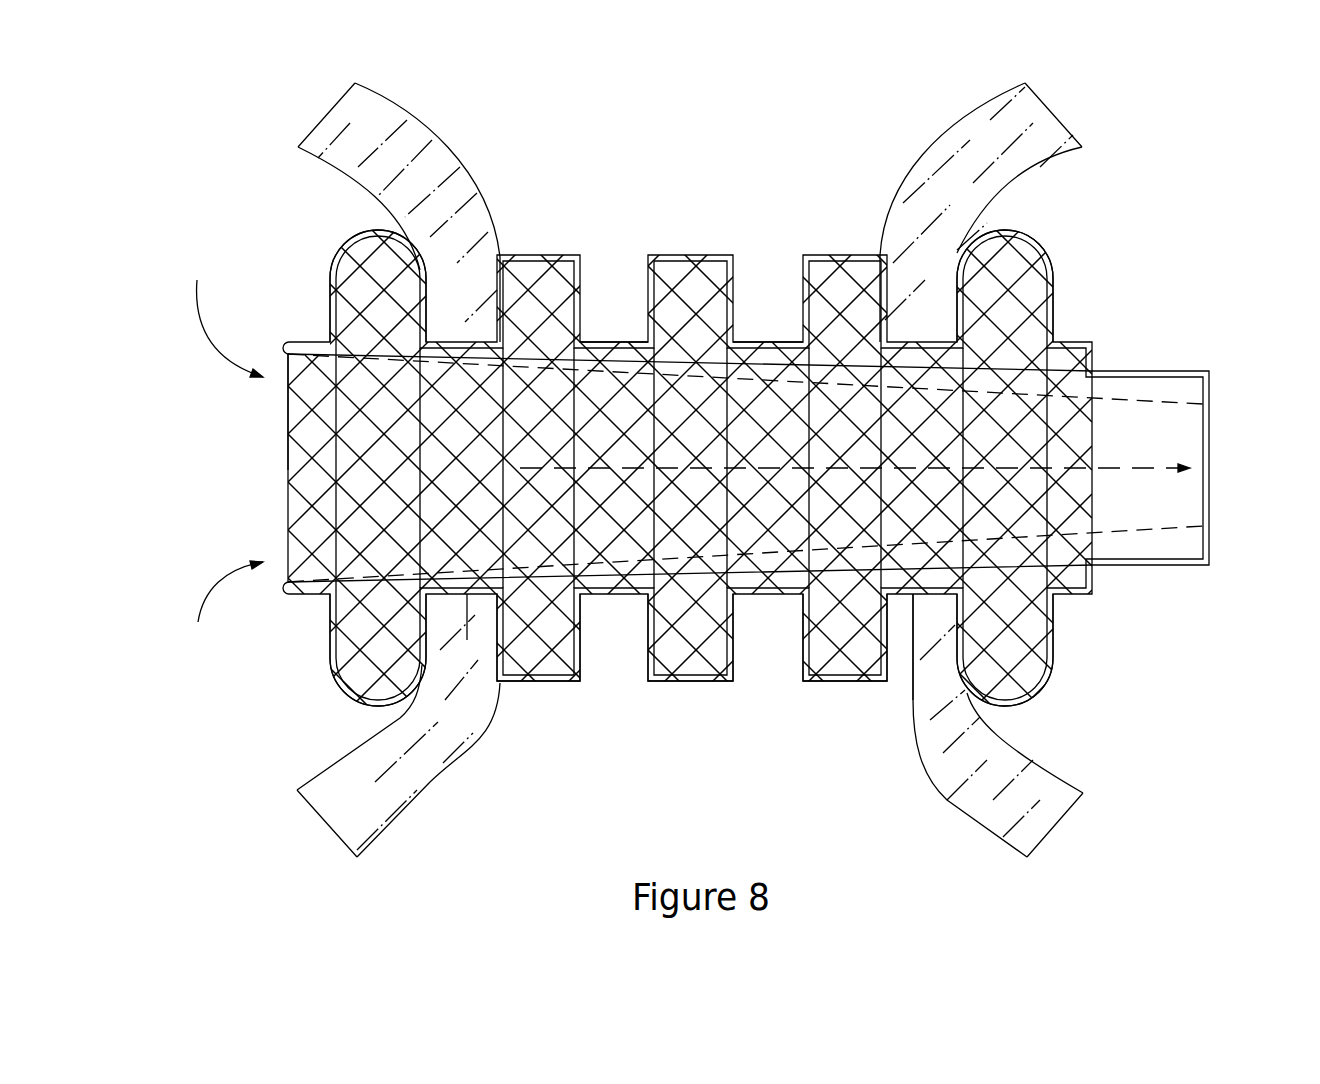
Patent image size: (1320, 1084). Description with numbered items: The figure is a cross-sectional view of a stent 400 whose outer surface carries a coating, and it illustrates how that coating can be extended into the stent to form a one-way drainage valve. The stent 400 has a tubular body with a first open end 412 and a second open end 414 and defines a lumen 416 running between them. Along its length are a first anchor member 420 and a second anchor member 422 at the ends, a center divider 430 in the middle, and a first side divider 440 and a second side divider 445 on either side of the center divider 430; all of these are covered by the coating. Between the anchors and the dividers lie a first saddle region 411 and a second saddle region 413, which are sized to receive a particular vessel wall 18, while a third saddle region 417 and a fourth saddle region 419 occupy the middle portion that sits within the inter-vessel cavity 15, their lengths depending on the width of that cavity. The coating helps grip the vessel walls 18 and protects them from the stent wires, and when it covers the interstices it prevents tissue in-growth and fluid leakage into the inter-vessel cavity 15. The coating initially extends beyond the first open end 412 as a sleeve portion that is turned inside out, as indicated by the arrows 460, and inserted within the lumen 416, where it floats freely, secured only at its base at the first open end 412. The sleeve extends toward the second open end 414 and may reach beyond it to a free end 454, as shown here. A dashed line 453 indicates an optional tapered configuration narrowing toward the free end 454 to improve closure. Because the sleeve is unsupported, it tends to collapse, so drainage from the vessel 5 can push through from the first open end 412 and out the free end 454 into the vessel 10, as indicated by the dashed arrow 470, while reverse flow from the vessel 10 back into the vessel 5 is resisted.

The vessel 5 is at (146, 302).
The vessel 10 is at (1158, 302).
The inter-vessel cavity 15 is at (679, 107).
The vessel walls 18 is at (342, 165).
The stent 400 is at (1162, 212).
The first saddle region 411 is at (467, 594).
The first open end 412 is at (288, 535).
The second saddle region 413 is at (912, 755).
The second open end 414 is at (1092, 426).
The lumen 416 is at (288, 403).
The third saddle region 417 is at (612, 343).
The fourth saddle region 419 is at (768, 343).
The first anchor member 420 is at (353, 692).
The second anchor member 422 is at (1033, 693).
The center divider 430 is at (710, 683).
The first side divider 440 is at (537, 680).
The second side divider 445 is at (843, 680).
The dashed line 453 is at (1203, 400).
The free end 454 is at (1178, 371).
The arrows 460 is at (207, 350).
The dashed arrow 470 is at (1105, 470).